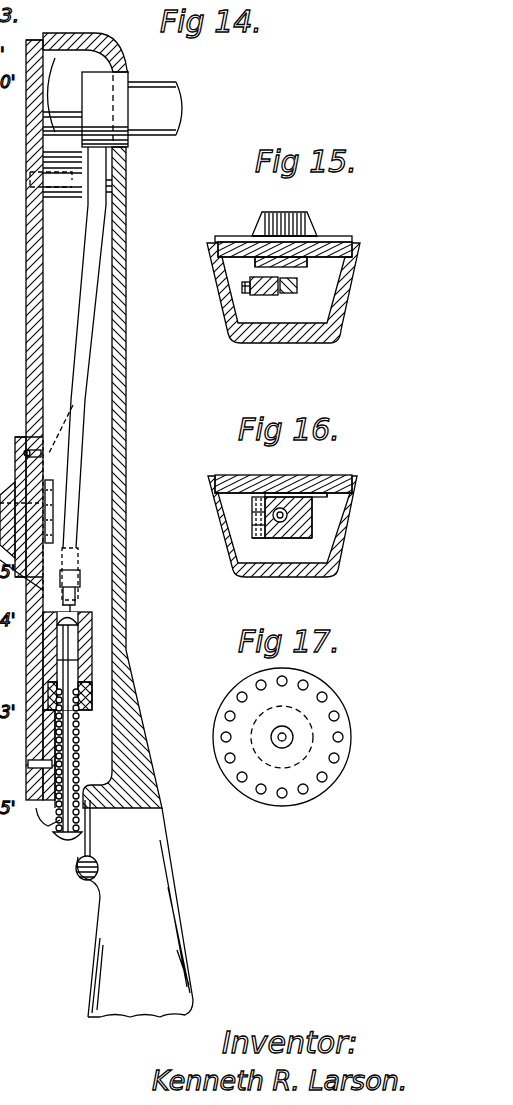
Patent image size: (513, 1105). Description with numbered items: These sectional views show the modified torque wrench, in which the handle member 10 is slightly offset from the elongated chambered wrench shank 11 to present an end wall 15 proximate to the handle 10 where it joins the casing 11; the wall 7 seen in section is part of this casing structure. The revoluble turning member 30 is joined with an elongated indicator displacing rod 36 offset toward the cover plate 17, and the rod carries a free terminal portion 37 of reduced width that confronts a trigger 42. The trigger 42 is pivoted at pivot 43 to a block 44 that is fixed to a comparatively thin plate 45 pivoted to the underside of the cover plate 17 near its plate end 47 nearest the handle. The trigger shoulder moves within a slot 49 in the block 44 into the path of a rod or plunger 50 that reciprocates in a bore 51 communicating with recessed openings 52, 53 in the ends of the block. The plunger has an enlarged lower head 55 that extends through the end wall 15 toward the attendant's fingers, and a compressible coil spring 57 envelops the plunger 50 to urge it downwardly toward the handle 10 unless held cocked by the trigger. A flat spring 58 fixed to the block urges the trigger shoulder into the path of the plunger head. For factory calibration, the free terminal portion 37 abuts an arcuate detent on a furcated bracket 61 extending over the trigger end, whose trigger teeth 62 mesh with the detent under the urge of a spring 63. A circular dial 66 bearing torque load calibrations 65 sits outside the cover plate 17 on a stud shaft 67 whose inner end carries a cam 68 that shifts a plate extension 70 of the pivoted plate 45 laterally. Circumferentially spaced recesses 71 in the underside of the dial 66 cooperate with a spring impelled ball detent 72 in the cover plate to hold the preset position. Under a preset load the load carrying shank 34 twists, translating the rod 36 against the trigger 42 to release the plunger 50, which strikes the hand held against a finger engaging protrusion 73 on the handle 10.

In FIG. 14, the barrel wall 7 is at (28, 250).
In FIG. 14, the handle member 10 is at (110, 972).
In FIG. 14, the elongated chambered wrench shank 11 is at (134, 348).
In FIG. 15, the elongated chambered wrench shank 11 is at (343, 321).
In FIG. 16, the elongated chambered wrench shank 11 is at (222, 563).
In FIG. 14, the end wall 15 is at (45, 822).
In FIG. 15, the cover plate 17 is at (220, 238).
In FIG. 16, the cover plate 17 is at (273, 485).
In FIG. 14, the revoluble turning member 30 is at (98, 78).
In FIG. 14, the load carrying shank 34 is at (57, 88).
In FIG. 14, the indicator displacing rod 36 is at (100, 222).
In FIG. 14, the free terminal portion 37 is at (72, 565).
In FIG. 15, the free terminal portion 37 is at (290, 294).
In FIG. 15, the trigger 42 is at (267, 283).
In FIG. 16, the trigger 42 is at (255, 526).
In FIG. 16, the trigger pivot 43 is at (250, 539).
In FIG. 14, the block 44 is at (85, 622).
In FIG. 16, the block 44 is at (312, 521).
In FIG. 15, the thin plate 45 is at (262, 248).
In FIG. 16, the thin plate 45 is at (262, 491).
In FIG. 15, the plate end 47 is at (353, 251).
In FIG. 16, the plate end 47 is at (294, 496).
In FIG. 16, the slot 49 is at (254, 499).
In FIG. 14, the plunger 50 is at (80, 716).
In FIG. 16, the plunger 50 is at (312, 497).
In FIG. 16, the bore 51 is at (300, 525).
In FIG. 14, the recessed opening 52 is at (78, 638).
In FIG. 14, the recessed opening 53 is at (92, 697).
In FIG. 14, the enlarged head 55 is at (60, 845).
In FIG. 14, the compressible coil spring 57 is at (78, 762).
In FIG. 14, the flat spring 58 is at (98, 650).
In FIG. 16, the flat spring 58 is at (258, 512).
In FIG. 15, the furcated bracket 61 is at (264, 296).
In FIG. 15, the trigger teeth 62 is at (245, 284).
In FIG. 15, the spring 63 is at (242, 288).
In FIG. 15, the torque load calibrations 65 is at (350, 238).
In FIG. 14, the circular dial 66 is at (22, 437).
In FIG. 15, the circular dial 66 is at (315, 228).
In FIG. 14, the stud shaft 67 is at (62, 430).
In FIG. 17, the stud shaft 67 is at (284, 737).
In FIG. 14, the cam 68 is at (50, 520).
In FIG. 15, the cam 68 is at (300, 268).
In FIG. 15, the plate extension 70 is at (310, 259).
In FIG. 16, the plate extension 70 is at (352, 500).
In FIG. 17, the circumferentially spaced recesses 71 is at (322, 696).
In FIG. 14, the spring impelled ball detent 72 is at (47, 425).
In FIG. 14, the finger engaging protrusion 73 is at (76, 885).